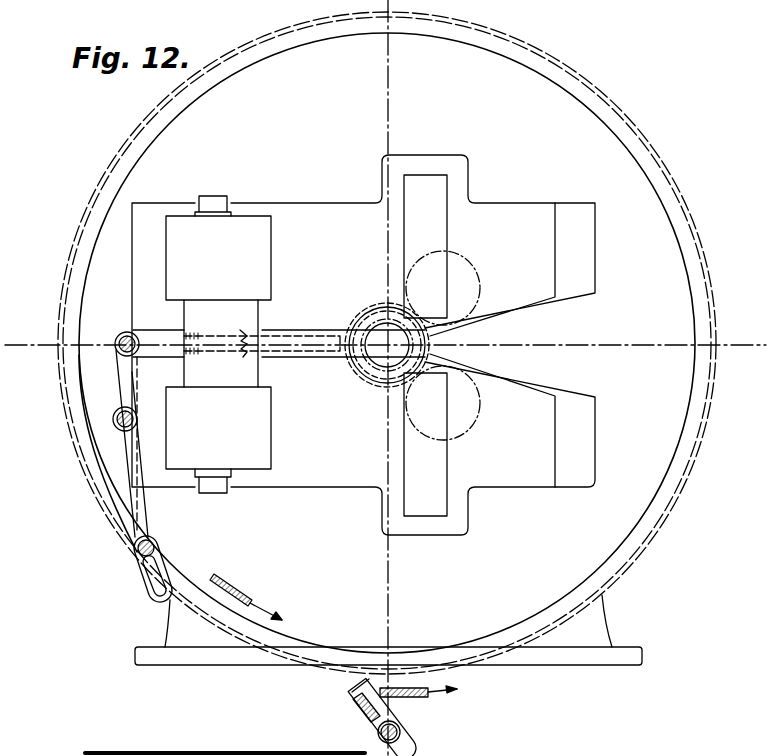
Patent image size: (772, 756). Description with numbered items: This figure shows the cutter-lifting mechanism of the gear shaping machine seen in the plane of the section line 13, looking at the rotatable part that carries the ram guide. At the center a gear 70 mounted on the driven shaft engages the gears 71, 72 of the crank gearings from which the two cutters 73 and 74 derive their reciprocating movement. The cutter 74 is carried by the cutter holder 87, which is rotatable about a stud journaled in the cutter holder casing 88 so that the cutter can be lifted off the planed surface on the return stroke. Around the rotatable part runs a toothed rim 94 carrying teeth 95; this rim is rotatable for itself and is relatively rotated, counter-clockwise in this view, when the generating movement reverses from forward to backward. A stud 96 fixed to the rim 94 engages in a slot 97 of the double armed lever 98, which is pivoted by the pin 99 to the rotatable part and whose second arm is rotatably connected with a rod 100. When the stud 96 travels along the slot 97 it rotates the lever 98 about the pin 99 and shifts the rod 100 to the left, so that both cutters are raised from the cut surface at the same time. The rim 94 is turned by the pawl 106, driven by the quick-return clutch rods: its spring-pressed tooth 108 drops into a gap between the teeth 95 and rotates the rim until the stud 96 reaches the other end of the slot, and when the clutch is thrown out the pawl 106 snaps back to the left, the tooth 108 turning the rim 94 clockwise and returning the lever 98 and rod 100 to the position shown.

The section line 13 is at (385, 346).
The gear 70 is at (367, 308).
The gear of crank gearing 71 is at (468, 284).
The gear of crank gearing 72 is at (468, 408).
The cutter 73 is at (248, 334).
The cutter 74 is at (242, 354).
The cutter holder 87 is at (258, 378).
The cutter holder casing 88 is at (270, 442).
The toothed rim 94 is at (105, 485).
The teeth 95 is at (322, 673).
The stud 96 is at (141, 553).
The slot 97 is at (160, 583).
The double armed lever 98 is at (138, 518).
The pin 99 is at (117, 425).
The rod 100 is at (150, 345).
The pawl 106 is at (395, 716).
The spring-pressed tooth 108 is at (355, 682).